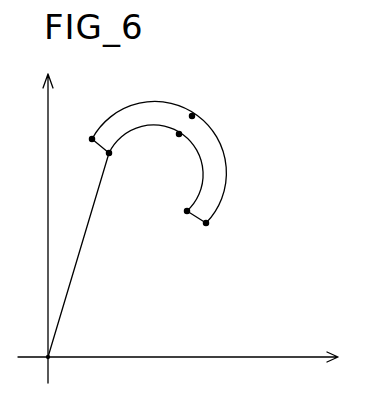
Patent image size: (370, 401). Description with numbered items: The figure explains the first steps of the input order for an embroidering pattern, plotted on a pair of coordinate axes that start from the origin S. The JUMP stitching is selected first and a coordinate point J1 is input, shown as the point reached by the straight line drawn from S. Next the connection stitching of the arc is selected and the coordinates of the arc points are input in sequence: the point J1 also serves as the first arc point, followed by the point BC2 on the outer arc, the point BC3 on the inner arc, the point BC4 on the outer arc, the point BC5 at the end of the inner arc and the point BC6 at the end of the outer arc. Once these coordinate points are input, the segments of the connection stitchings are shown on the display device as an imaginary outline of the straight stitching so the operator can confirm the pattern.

The coordinate point BC2 is at (92, 139).
The coordinate point J1 is at (109, 153).
The coordinate point BC3 is at (179, 134).
The coordinate point BC4 is at (192, 116).
The coordinate point BC5 is at (187, 211).
The coordinate point BC6 is at (206, 223).
The start point / origin S is at (48, 357).